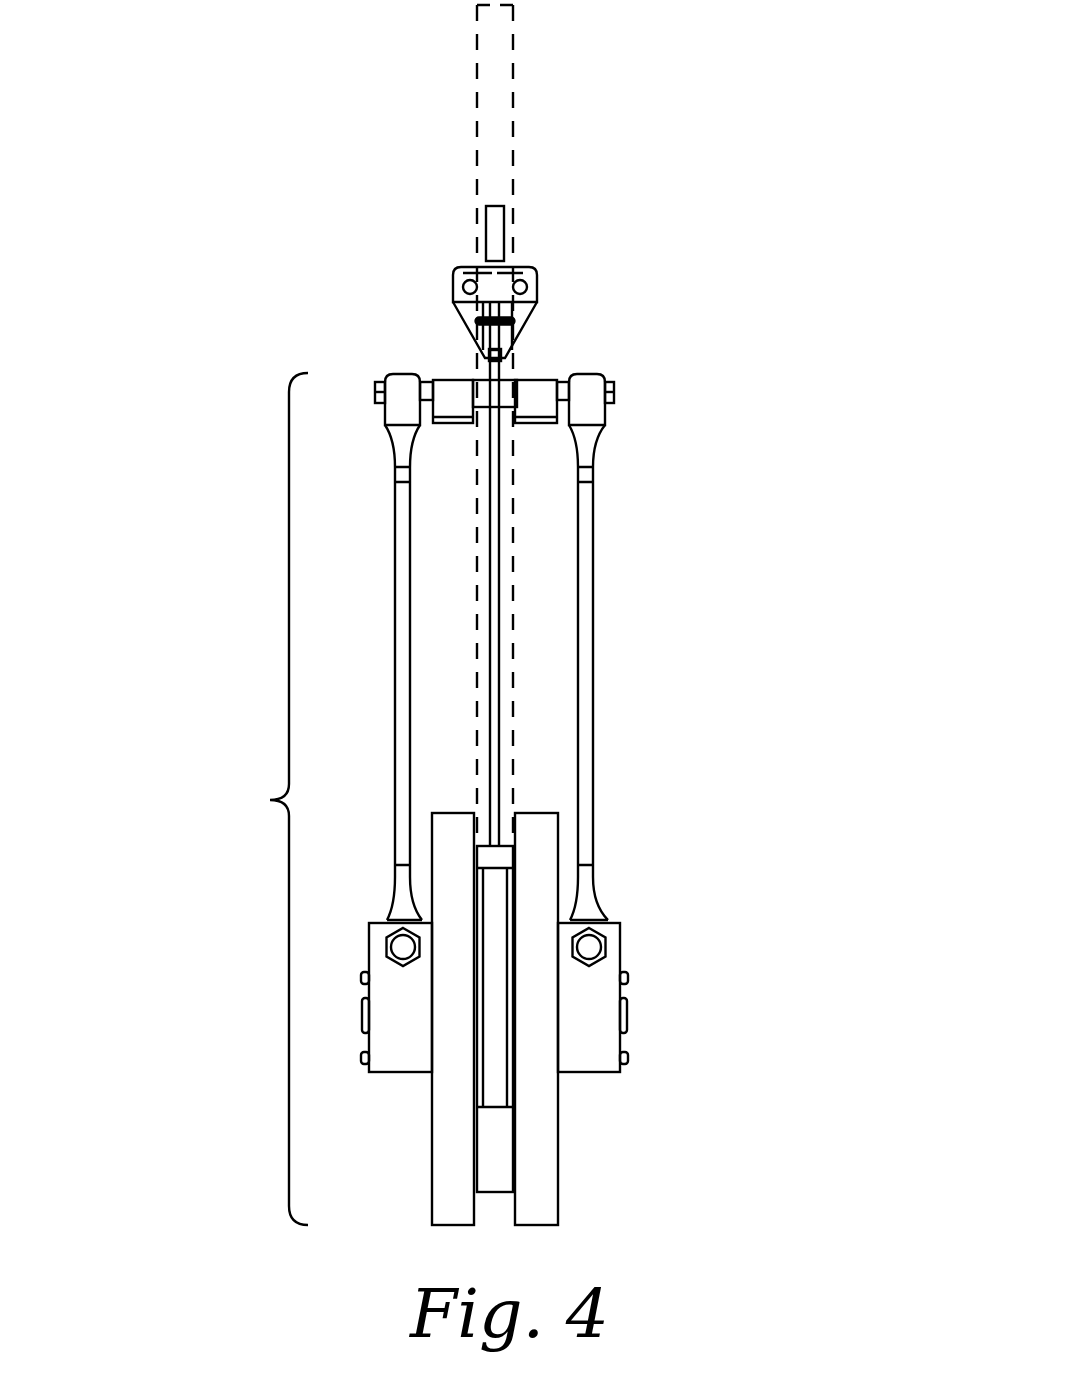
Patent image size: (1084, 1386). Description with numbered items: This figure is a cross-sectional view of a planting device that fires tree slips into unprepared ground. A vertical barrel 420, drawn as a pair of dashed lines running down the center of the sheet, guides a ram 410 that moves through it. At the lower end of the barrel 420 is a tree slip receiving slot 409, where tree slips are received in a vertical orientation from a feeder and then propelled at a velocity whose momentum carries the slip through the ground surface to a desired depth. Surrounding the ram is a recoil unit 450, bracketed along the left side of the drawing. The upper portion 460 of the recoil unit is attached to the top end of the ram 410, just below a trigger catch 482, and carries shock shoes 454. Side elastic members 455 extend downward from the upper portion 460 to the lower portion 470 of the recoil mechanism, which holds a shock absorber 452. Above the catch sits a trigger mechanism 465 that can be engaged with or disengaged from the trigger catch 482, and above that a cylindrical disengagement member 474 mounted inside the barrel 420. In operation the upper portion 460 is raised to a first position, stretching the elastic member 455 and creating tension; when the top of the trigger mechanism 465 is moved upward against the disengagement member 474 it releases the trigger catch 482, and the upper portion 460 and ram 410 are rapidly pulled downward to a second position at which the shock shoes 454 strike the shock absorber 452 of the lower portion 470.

The tree slip receiving slot 409 is at (511, 1080).
The ram 410 is at (499, 681).
The barrel 420 is at (513, 132).
The recoil unit 450 is at (253, 799).
The shock absorber 452 is at (545, 813).
The shock shoes 454 is at (447, 376).
The elastic member 455 is at (594, 742).
The upper portion 460 is at (669, 388).
The trigger mechanism 465 is at (552, 283).
The lower portion 470 is at (678, 927).
The disengagement member 474 is at (486, 233).
The trigger catch 482 is at (500, 355).